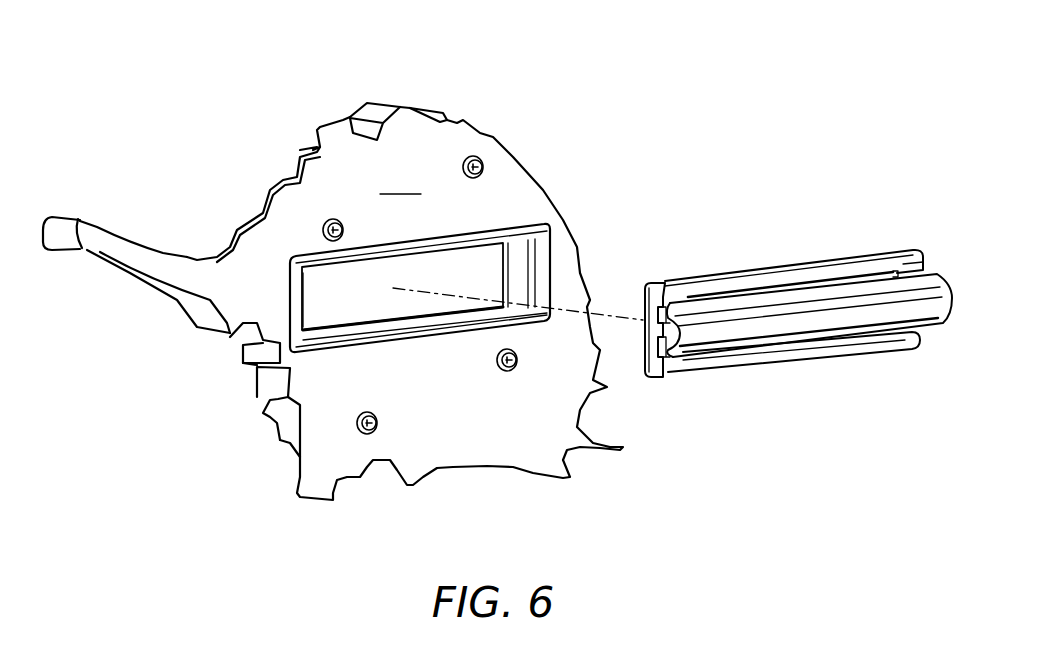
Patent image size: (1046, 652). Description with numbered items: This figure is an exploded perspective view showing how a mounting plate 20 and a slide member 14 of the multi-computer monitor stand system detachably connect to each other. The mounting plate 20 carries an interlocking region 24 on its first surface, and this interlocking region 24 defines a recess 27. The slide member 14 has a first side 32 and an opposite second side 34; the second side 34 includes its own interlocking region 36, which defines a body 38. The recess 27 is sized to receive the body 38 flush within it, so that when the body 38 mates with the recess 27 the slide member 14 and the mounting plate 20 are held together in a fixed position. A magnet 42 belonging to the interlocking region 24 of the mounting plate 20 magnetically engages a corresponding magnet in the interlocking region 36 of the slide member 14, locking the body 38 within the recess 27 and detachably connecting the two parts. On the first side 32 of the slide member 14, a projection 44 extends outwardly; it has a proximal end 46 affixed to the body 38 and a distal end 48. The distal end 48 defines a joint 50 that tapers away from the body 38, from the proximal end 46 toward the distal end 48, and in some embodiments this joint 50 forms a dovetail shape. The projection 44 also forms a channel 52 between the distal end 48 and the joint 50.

The slide member 14 is at (778, 295).
The mounting plate 20 is at (402, 127).
The interlocking region 24 is at (521, 243).
The recess 27 is at (545, 271).
The first side 32 is at (913, 342).
The second side 34 is at (647, 283).
The interlocking region 36 is at (640, 343).
The body 38 is at (790, 260).
The magnet 42 is at (320, 300).
The projection 44 is at (937, 303).
The proximal end 46 is at (667, 303).
The distal end 48 is at (683, 332).
The joint 50 is at (667, 350).
The channel 52 is at (660, 307).